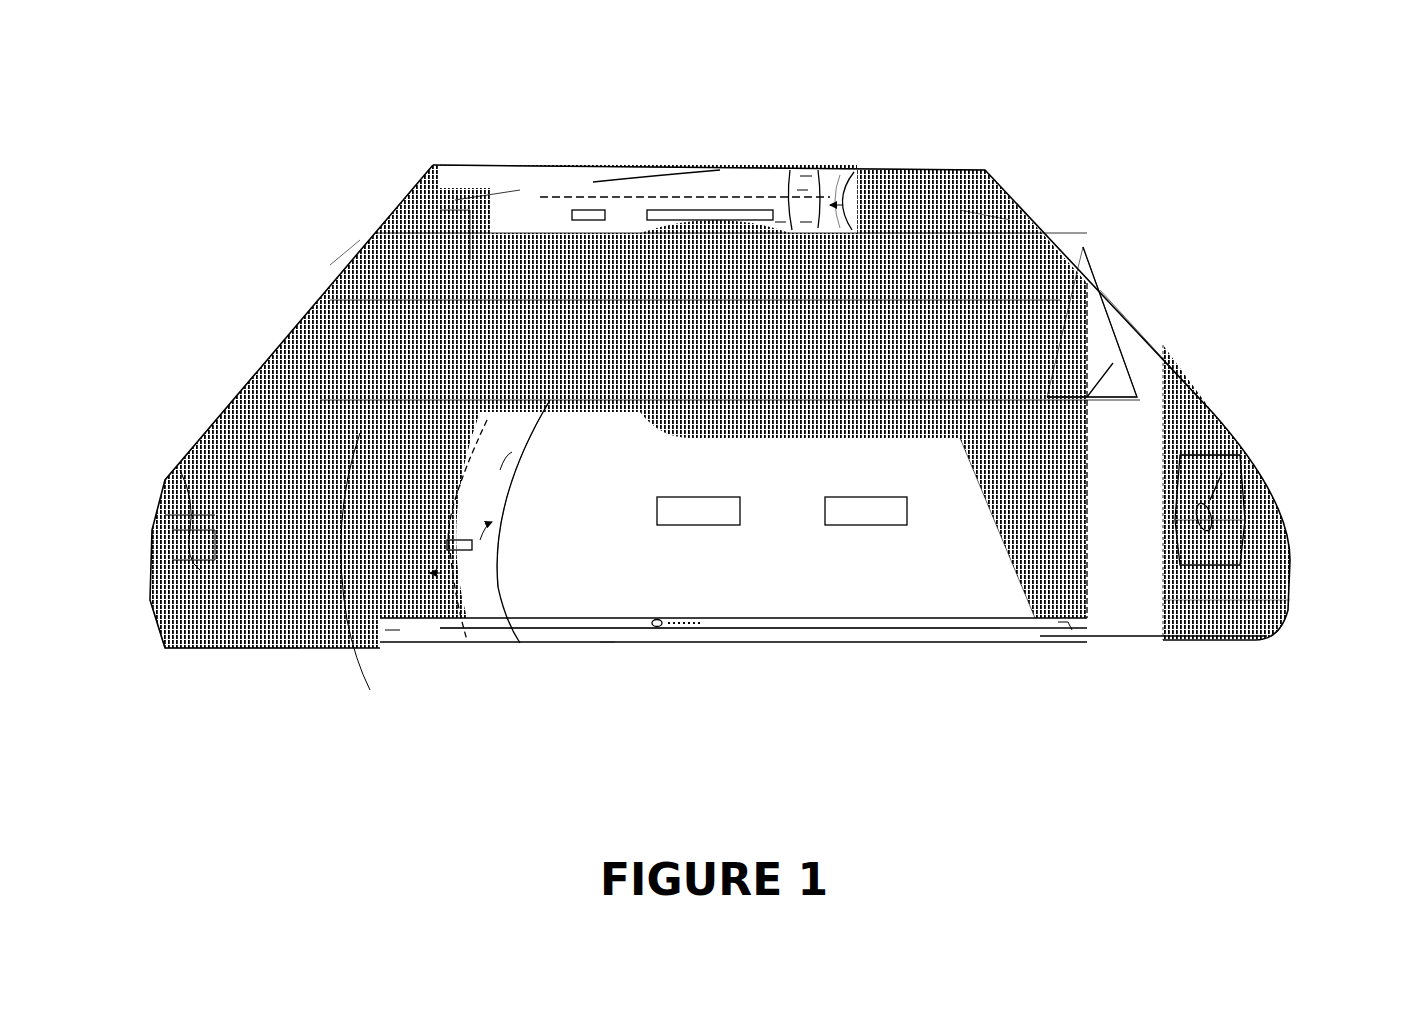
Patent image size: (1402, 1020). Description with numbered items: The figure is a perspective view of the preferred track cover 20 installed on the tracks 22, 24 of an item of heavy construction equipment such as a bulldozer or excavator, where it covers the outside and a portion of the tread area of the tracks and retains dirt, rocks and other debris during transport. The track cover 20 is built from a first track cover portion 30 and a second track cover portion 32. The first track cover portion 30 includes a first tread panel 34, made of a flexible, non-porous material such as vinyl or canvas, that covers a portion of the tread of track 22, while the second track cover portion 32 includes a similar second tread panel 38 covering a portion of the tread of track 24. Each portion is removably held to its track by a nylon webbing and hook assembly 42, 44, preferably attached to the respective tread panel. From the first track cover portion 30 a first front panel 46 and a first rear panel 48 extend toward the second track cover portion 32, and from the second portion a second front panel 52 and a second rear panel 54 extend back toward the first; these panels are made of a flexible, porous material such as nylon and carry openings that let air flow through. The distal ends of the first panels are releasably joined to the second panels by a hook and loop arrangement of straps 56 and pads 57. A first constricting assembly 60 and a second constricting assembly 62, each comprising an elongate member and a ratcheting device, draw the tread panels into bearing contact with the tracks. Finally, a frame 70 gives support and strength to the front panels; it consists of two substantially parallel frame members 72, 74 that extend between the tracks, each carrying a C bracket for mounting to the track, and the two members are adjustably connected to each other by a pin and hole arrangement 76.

The track cover 20 is at (705, 140).
The track 22 is at (477, 213).
The track 24 is at (993, 240).
The first track cover portion 30 is at (330, 263).
The second track cover portion 32 is at (1167, 337).
The first tread panel 34 is at (287, 600).
The second tread panel 38 is at (1193, 600).
The nylon webbing and hook assembly 42 is at (440, 210).
The nylon webbing and hook assembly 44 is at (1033, 307).
The first front panel 46 is at (370, 690).
The first rear panel 48 is at (737, 187).
The second front panel 52 is at (970, 563).
The second rear panel 54 is at (873, 173).
The straps 56 is at (500, 450).
The pads 57 is at (462, 552).
The first constricting assembly 60 is at (170, 515).
The second constricting assembly 62 is at (1253, 513).
The frame 70 is at (608, 648).
The frame member 72 is at (545, 625).
The frame member 74 is at (870, 625).
The pin and hole arrangement 76 is at (658, 627).